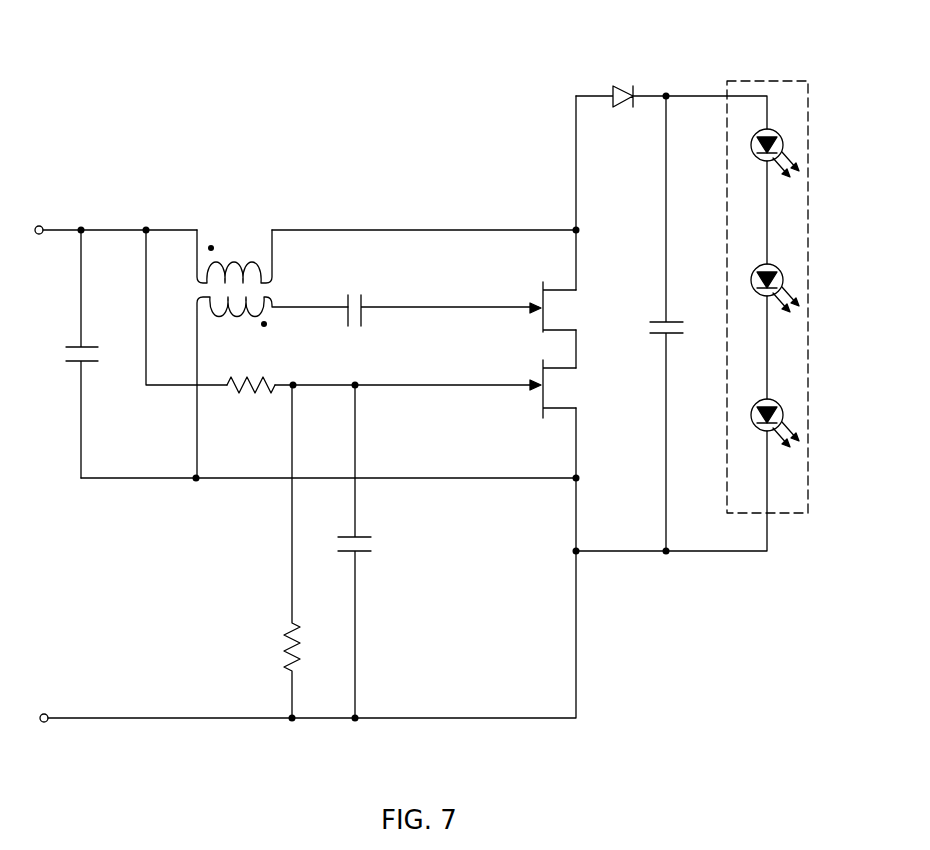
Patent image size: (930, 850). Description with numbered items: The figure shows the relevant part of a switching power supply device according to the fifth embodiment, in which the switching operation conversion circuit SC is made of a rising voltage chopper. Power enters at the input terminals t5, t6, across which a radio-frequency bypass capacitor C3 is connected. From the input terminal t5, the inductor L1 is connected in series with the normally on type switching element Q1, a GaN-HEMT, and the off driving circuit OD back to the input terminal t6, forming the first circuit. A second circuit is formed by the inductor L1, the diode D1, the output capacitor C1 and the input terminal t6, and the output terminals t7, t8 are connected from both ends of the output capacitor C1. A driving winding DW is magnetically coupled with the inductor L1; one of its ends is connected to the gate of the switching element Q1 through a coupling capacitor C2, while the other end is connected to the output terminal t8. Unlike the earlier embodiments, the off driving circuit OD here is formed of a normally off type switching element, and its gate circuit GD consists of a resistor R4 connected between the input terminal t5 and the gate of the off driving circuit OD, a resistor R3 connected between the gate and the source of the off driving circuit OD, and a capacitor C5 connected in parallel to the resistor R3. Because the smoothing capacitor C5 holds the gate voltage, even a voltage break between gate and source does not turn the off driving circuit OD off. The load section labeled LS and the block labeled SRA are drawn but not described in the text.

The input terminal t5 is at (38, 225).
The input terminal t6 is at (47, 723).
The output terminal t7 is at (667, 90).
The output terminal t8 is at (667, 557).
The inductor L1 is at (234, 258).
The driving winding DW is at (233, 313).
The coupling capacitor C2 is at (354, 290).
The radio-frequency bypass capacitor C3 is at (66, 348).
The resistor R4 is at (245, 388).
The resistor R3 is at (282, 655).
The capacitor C5 is at (373, 543).
The normally on type switching element Q1 is at (578, 305).
The off driving circuit OD is at (563, 386).
The diode D1 is at (627, 82).
The output capacitor C1 is at (684, 326).
The light source (LED string) LS is at (805, 145).
The self-excited oscillation circuit SRA is at (310, 104).
The switching operation conversion circuit SC is at (378, 193).
The gate circuit GD is at (243, 587).